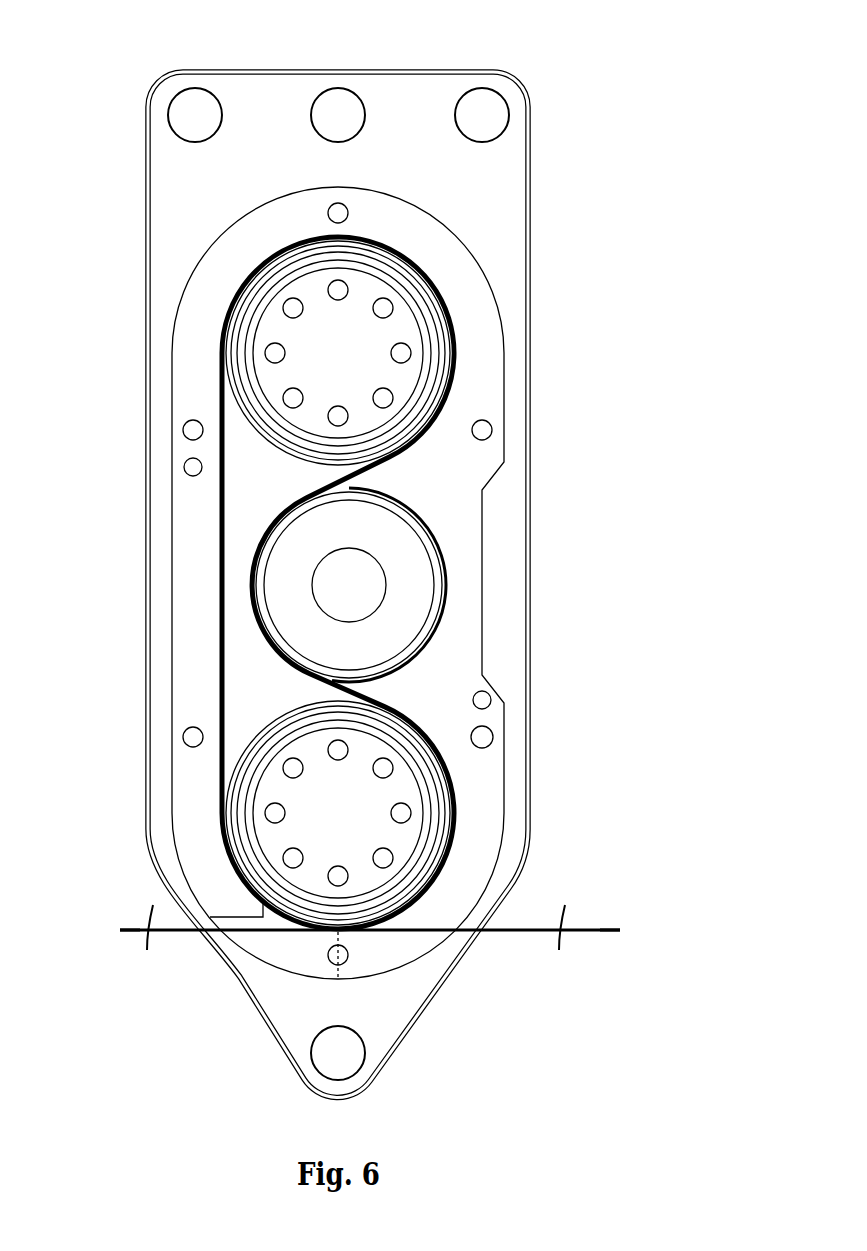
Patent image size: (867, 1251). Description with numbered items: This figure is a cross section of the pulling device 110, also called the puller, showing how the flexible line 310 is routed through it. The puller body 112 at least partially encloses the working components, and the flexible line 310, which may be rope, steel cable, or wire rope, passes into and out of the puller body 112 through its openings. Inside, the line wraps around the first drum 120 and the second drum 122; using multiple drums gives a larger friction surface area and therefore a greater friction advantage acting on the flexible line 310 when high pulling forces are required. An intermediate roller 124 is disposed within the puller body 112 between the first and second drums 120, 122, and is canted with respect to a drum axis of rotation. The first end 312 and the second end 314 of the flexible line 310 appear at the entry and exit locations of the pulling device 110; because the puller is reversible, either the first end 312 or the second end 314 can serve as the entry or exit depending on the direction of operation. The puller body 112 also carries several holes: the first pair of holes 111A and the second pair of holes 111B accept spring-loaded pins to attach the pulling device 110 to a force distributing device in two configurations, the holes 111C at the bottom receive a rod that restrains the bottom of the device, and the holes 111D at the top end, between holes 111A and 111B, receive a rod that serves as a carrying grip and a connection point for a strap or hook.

The pulling device 110 is at (627, 90).
The first pair of holes 111A is at (488, 100).
The second pair of holes 111B is at (188, 103).
The holes 111C is at (350, 1052).
The holes 111D is at (345, 97).
The puller body 112 is at (518, 482).
The first drum 120 is at (446, 781).
The second drum 122 is at (430, 320).
The intermediate roller 124 is at (432, 574).
The flexible line 310 is at (584, 928).
The first end 312 is at (620, 927).
The second end 314 is at (120, 928).